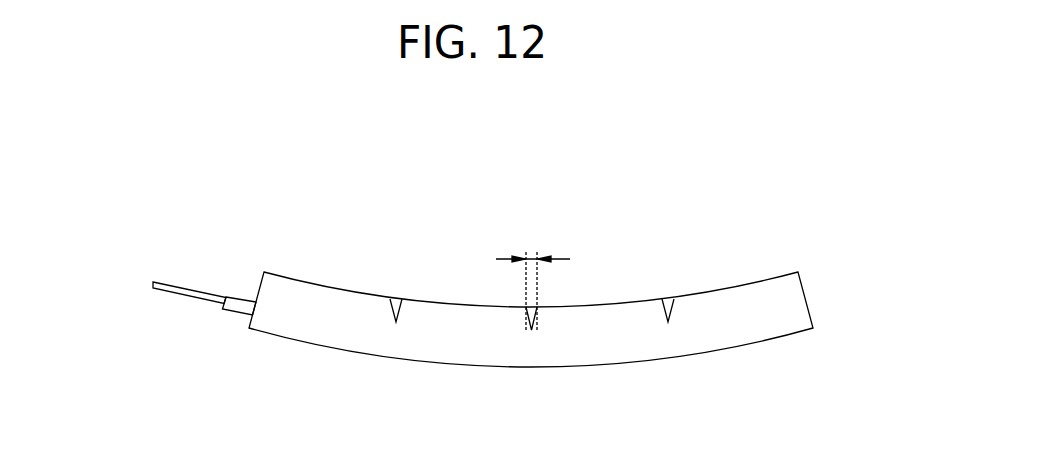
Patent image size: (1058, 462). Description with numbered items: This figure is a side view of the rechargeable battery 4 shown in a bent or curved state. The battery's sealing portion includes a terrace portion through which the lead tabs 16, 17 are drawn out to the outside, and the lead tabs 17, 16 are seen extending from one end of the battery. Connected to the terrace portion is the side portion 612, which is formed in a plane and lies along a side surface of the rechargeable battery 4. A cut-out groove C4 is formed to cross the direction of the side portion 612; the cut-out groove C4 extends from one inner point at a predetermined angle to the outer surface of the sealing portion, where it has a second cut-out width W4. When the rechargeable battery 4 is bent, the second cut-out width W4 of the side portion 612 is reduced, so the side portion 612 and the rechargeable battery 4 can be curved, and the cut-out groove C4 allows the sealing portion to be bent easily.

The rechargeable battery 4 is at (447, 193).
The side portion 612 is at (632, 343).
The cut-out groove C4 is at (532, 321).
The second cut-out width W4 is at (533, 274).
The lead tab 17 is at (191, 296).
The lead tab 16 is at (199, 331).